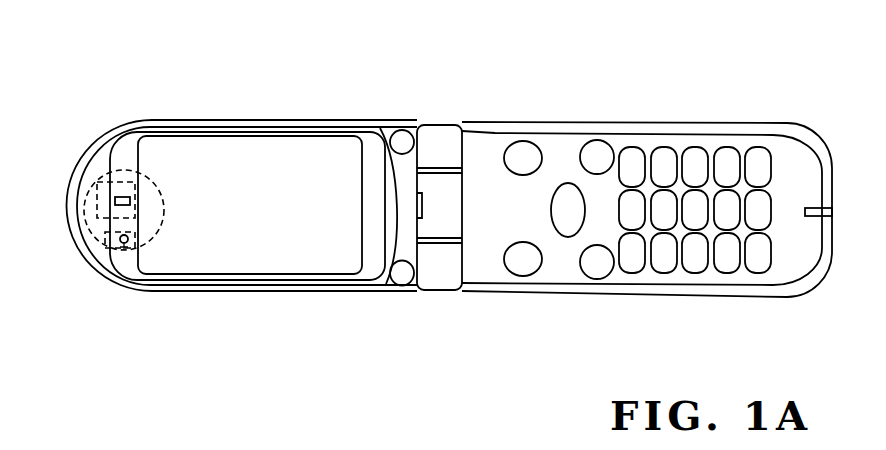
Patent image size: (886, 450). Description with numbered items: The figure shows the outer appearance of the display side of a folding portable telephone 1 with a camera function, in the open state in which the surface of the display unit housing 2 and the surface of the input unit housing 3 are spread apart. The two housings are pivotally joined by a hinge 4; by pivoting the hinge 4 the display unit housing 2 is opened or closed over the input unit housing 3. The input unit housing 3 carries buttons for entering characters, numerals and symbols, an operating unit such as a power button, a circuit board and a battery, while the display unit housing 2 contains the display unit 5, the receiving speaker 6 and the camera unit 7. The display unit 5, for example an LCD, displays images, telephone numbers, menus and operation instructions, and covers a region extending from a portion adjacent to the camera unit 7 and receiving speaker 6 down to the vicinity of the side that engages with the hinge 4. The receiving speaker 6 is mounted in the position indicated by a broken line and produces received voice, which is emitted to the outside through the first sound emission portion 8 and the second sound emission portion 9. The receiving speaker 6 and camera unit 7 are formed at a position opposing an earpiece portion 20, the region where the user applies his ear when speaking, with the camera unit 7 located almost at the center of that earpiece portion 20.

The folding portable telephone 1 is at (143, 86).
The display unit housing 2 is at (268, 280).
The input unit housing 3 is at (665, 290).
The hinge 4 is at (437, 292).
The display unit 5 is at (254, 138).
The receiving speaker 6 is at (126, 257).
The camera unit 7 is at (82, 207).
The first sound emission portion 8 is at (119, 240).
The second sound emission portion 9 is at (116, 198).
The earpiece portion 20 is at (161, 248).